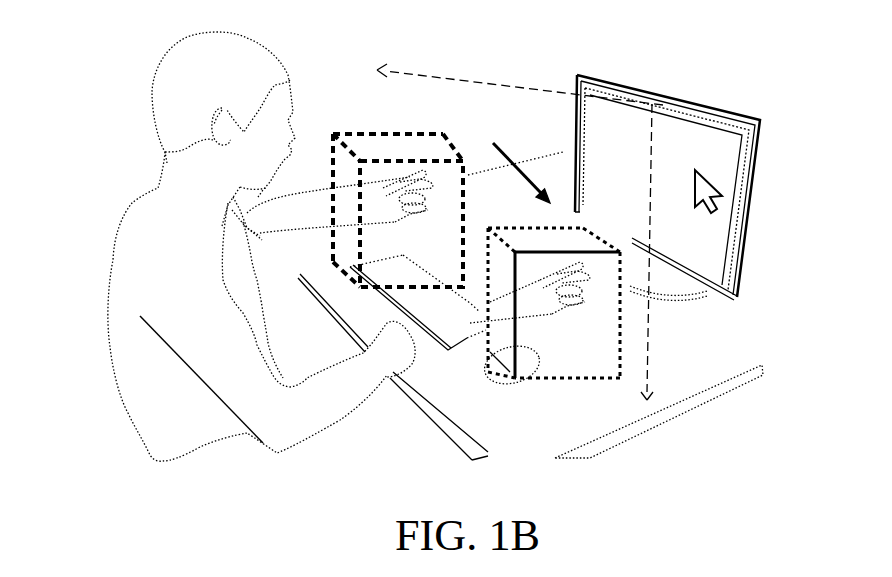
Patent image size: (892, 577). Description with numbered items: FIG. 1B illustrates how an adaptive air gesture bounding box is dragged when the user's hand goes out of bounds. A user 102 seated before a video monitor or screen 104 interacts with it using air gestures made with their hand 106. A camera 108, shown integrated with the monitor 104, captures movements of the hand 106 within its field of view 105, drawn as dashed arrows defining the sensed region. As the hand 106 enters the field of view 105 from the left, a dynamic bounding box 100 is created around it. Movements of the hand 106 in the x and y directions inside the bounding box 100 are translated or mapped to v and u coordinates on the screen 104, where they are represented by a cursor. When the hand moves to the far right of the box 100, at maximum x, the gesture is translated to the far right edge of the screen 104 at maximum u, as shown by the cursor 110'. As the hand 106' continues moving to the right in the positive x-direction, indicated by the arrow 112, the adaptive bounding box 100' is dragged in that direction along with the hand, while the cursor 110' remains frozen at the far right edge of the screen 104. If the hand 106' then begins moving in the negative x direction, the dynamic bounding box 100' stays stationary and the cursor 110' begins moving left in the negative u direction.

The bounding box 100 is at (409, 195).
The adaptive bounding box (dragged position) 100' is at (554, 291).
The user 102 is at (115, 248).
The video monitor or screen 104 is at (742, 143).
The field of view (FOV) 105 is at (510, 87).
The hand 106 is at (358, 196).
The hand (moved position) 106' is at (530, 347).
The camera 108 is at (667, 93).
The cursor 110' is at (742, 208).
The arrow 112 is at (512, 153).